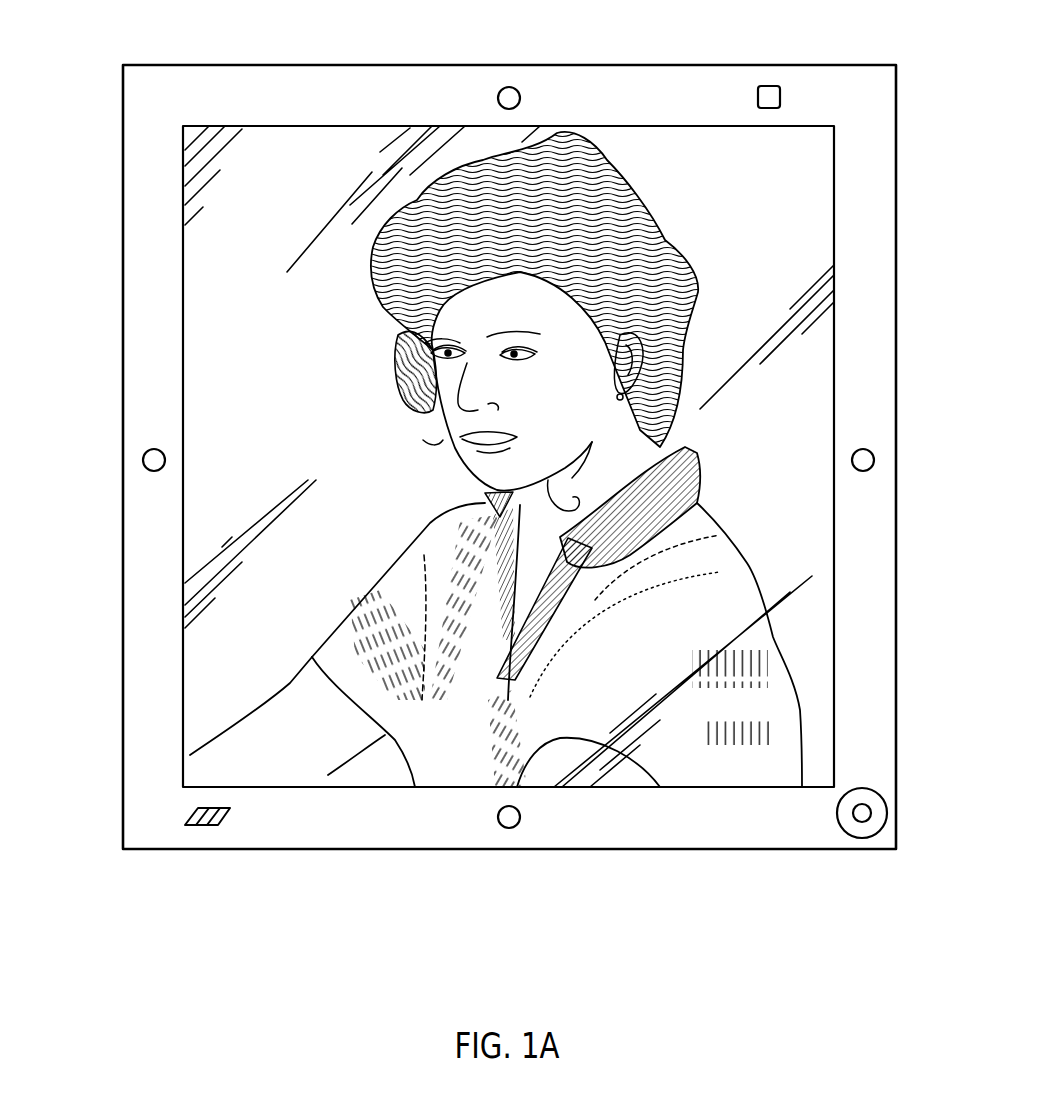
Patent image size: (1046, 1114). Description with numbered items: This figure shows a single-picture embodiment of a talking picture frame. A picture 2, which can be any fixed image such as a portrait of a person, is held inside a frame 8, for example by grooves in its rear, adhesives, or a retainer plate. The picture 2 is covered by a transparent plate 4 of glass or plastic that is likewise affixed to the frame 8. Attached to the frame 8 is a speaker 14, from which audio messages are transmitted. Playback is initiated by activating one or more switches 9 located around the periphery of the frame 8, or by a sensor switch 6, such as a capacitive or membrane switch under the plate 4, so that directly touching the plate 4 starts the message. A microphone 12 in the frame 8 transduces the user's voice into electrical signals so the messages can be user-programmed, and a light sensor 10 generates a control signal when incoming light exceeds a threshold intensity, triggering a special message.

The picture 2 is at (397, 197).
The plate 4 is at (215, 222).
The sensor switch 6 is at (368, 470).
The frame 8 is at (876, 244).
The switches 9 is at (501, 91).
The light sensor 10 is at (769, 86).
The microphone 12 is at (200, 827).
The speaker 14 is at (845, 835).